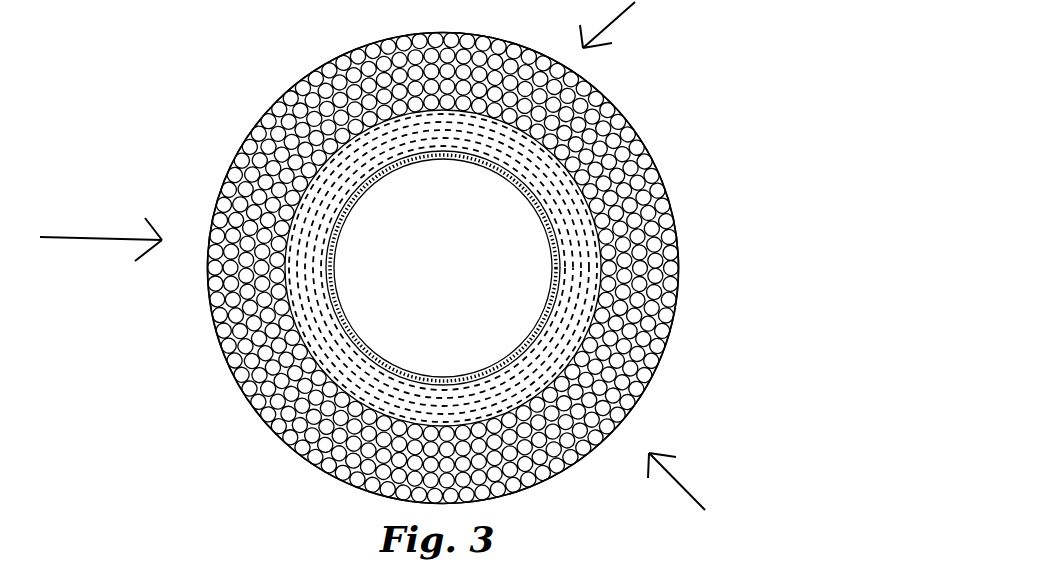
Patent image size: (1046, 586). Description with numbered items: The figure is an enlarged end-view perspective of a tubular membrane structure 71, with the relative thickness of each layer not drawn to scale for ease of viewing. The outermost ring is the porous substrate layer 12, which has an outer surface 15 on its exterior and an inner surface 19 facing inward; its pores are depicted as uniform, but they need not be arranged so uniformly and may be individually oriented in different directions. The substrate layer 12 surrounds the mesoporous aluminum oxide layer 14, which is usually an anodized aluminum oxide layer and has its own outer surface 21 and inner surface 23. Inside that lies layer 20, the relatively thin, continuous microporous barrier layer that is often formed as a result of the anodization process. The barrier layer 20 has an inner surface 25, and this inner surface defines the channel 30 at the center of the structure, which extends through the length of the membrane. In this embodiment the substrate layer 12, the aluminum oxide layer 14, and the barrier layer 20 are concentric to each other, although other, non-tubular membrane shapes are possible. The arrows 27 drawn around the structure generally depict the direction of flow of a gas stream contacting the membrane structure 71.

The porous substrate layer 12 is at (667, 256).
The mesoporous aluminum oxide layer 14 is at (335, 286).
The outer surface 15 is at (667, 188).
The inner surface 19 is at (570, 178).
The microporous barrier layer 20 is at (335, 247).
The outer surface 21 is at (612, 242).
The inner surface 23 is at (503, 325).
The inner surface 25 is at (546, 311).
The arrows 27 is at (381, 256).
The channel 30 is at (451, 281).
The membrane structure 71 is at (188, 157).